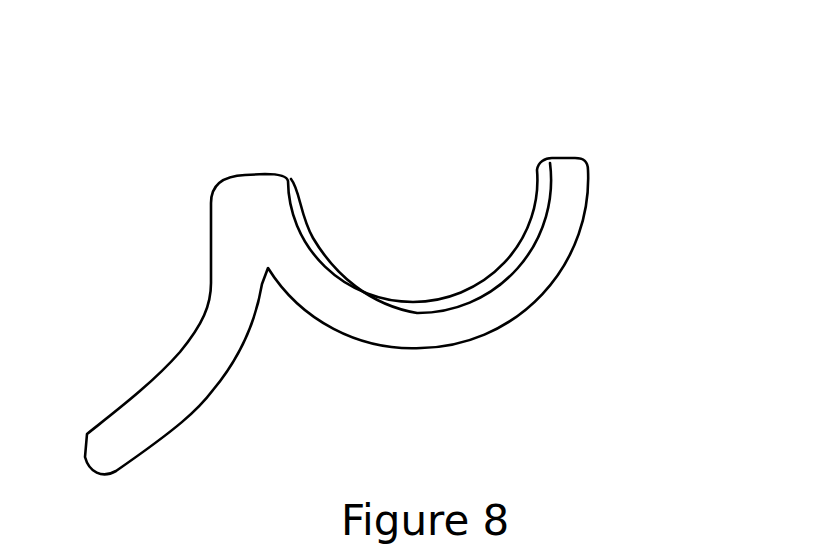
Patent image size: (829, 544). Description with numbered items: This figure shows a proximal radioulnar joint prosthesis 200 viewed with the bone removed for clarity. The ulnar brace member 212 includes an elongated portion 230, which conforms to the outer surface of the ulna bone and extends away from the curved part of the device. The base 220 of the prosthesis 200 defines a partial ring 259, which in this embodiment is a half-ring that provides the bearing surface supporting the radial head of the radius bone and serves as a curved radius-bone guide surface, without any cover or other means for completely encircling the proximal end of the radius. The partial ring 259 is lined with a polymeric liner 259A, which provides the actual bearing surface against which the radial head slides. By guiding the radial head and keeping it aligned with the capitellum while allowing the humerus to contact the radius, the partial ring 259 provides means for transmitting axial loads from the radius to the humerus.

The proximal radioulnar joint prosthesis 200 is at (592, 140).
The ulnar brace member 212 is at (432, 350).
The base 220 is at (538, 287).
The elongated portion 230 is at (160, 400).
The partial ring 259 is at (398, 310).
The polymeric liner 259A is at (330, 257).